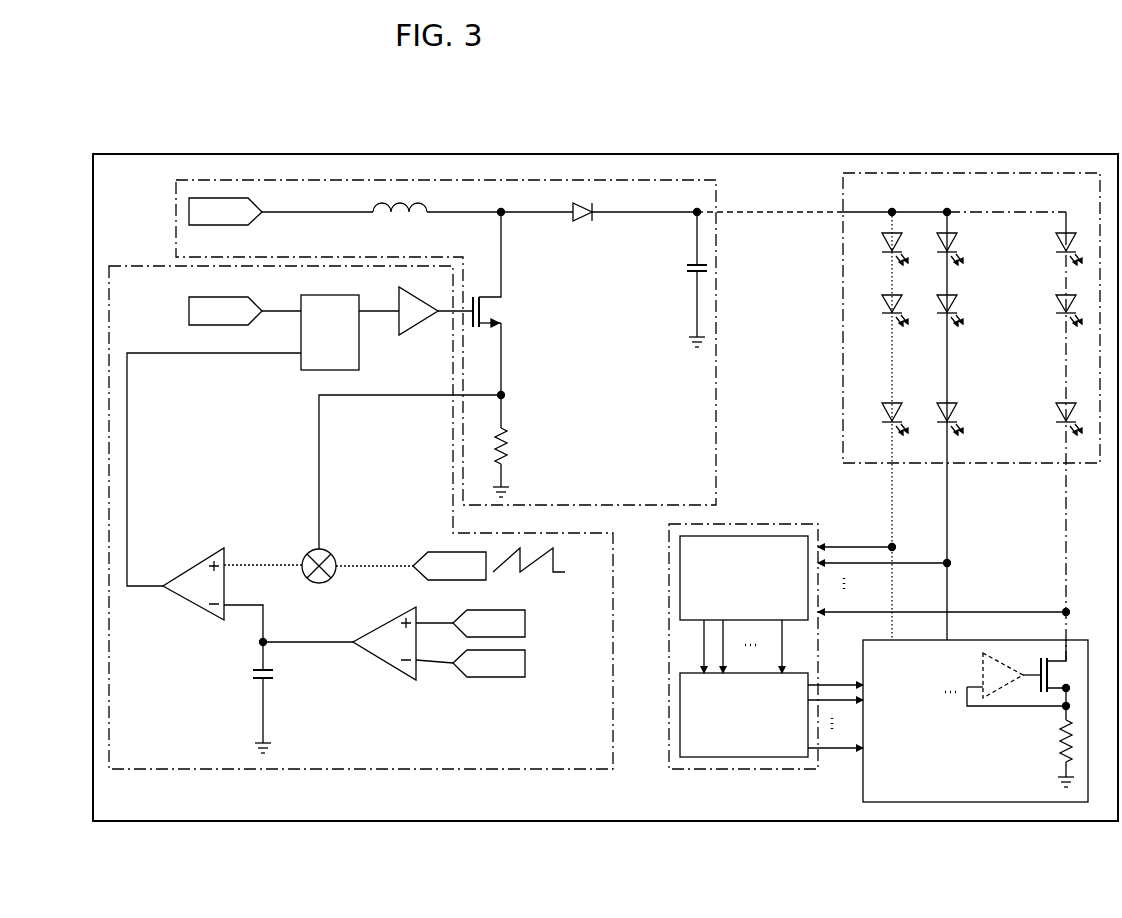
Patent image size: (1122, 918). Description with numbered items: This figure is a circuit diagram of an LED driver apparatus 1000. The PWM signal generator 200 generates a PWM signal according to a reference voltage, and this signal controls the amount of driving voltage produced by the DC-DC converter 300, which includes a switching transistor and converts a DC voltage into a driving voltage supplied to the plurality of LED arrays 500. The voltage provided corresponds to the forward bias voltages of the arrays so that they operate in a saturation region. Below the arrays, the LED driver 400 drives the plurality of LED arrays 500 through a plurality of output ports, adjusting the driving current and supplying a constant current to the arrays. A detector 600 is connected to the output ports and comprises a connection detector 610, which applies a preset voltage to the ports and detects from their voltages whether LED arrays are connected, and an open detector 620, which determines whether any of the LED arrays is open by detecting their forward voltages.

The LED driver apparatus 1000 is at (1056, 154).
The PWM signal generator 200 is at (613, 769).
The DC-DC converter 300 is at (716, 180).
The LED driver 400 is at (863, 790).
The plurality of LED arrays 500 is at (843, 254).
The detector 600 is at (668, 769).
The connection detector 610 is at (680, 578).
The open detector 620 is at (680, 720).